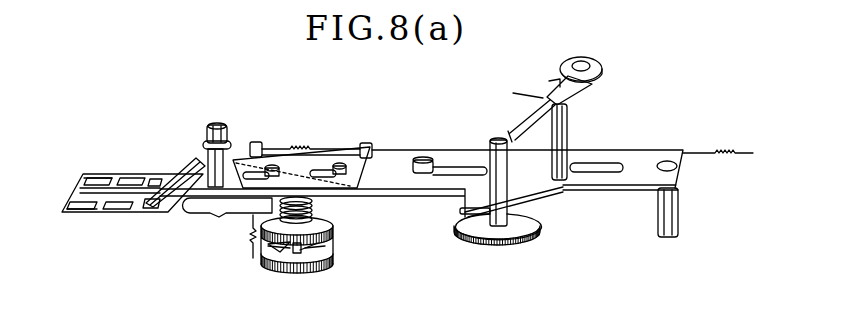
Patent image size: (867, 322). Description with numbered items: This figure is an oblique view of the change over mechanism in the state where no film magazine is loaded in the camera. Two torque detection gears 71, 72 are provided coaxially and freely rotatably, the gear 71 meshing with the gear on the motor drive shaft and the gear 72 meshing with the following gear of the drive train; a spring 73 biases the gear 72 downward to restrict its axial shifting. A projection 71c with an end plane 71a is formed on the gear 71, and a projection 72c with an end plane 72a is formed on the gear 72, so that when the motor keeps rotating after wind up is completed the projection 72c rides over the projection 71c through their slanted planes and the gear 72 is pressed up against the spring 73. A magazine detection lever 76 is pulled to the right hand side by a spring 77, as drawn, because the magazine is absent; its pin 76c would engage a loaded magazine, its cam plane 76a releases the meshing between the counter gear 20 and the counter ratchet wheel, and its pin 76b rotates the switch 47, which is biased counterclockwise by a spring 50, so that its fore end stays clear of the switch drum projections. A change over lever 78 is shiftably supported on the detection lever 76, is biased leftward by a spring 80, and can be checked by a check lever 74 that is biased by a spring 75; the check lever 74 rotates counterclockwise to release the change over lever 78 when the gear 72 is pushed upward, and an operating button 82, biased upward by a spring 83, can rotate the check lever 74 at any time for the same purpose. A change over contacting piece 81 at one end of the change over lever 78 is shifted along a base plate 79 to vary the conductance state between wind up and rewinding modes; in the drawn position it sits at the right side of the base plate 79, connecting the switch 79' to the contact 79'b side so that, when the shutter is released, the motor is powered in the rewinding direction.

The counter gear 20 is at (520, 240).
The switch 47 is at (586, 84).
The spring 50 is at (532, 95).
The torque detection gear 71 is at (322, 265).
The end plane 71a is at (296, 256).
The projection 71c is at (270, 262).
The torque detection gear 72 is at (333, 233).
The end plane 72a is at (302, 266).
The projection 72c is at (333, 258).
The spring 73 is at (318, 204).
The check lever 74 is at (205, 215).
The spring 75 is at (250, 243).
The magazine detection lever 76 is at (394, 150).
The cam plane 76a is at (548, 193).
The pin 76b is at (567, 140).
The pin 76c is at (680, 229).
The spring 77 is at (720, 152).
The change over lever 78 is at (237, 165).
The base plate 79 is at (132, 167).
The switch 79' is at (62, 198).
The contact 79'b is at (152, 228).
The spring 80 is at (297, 147).
The change over contacting piece 81 is at (177, 165).
The operating button 82 is at (225, 140).
The spring 83 is at (214, 124).